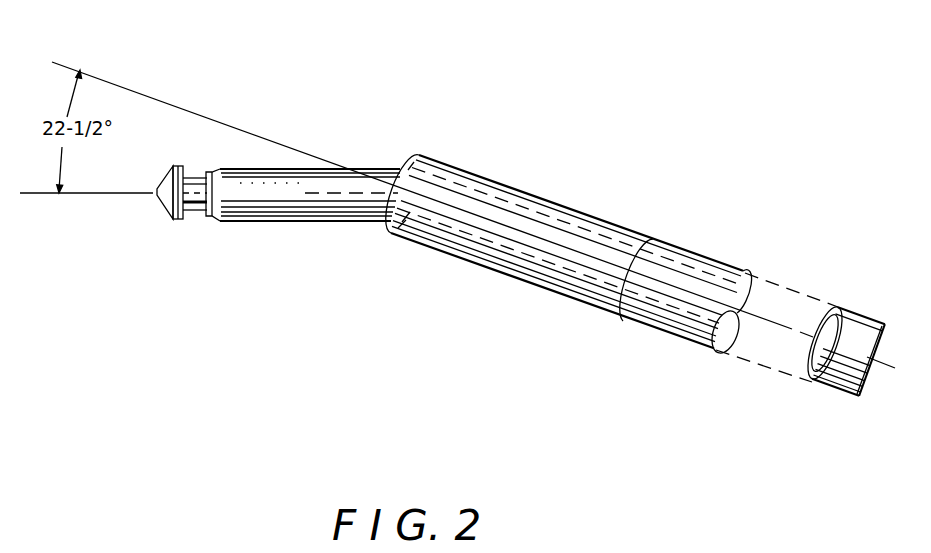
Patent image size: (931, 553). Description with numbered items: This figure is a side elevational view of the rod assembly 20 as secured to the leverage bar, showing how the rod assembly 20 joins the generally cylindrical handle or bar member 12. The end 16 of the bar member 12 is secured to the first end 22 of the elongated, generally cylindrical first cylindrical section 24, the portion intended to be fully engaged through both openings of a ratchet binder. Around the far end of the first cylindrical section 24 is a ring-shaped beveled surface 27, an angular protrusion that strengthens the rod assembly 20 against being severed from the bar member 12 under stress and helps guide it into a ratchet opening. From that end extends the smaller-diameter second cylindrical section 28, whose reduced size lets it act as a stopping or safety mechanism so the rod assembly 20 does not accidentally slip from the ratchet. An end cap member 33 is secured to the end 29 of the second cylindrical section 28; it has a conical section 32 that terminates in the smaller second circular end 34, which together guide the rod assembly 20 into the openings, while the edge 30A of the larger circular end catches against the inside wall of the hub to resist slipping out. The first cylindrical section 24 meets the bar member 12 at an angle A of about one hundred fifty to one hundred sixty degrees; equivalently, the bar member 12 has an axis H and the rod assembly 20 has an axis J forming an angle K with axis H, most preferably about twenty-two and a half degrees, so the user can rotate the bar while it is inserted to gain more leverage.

The bar member 12 is at (604, 205).
The end of bar member 16 is at (412, 160).
The rod assembly 20 is at (380, 160).
The first end of first cylindrical section 22 is at (401, 172).
The first cylindrical section 24 is at (298, 173).
The beveled surface 27 is at (219, 173).
The second cylindrical section 28 is at (203, 211).
The end of second cylindrical section 29 is at (197, 212).
The edge of first circular end 30A is at (187, 213).
The conical section 32 is at (181, 221).
The end cap member 33 is at (111, 169).
The second circular end 34 is at (157, 190).
The angle K is at (212, 124).
The axis J is at (352, 193).
The angle A is at (412, 250).
The axis H is at (653, 240).